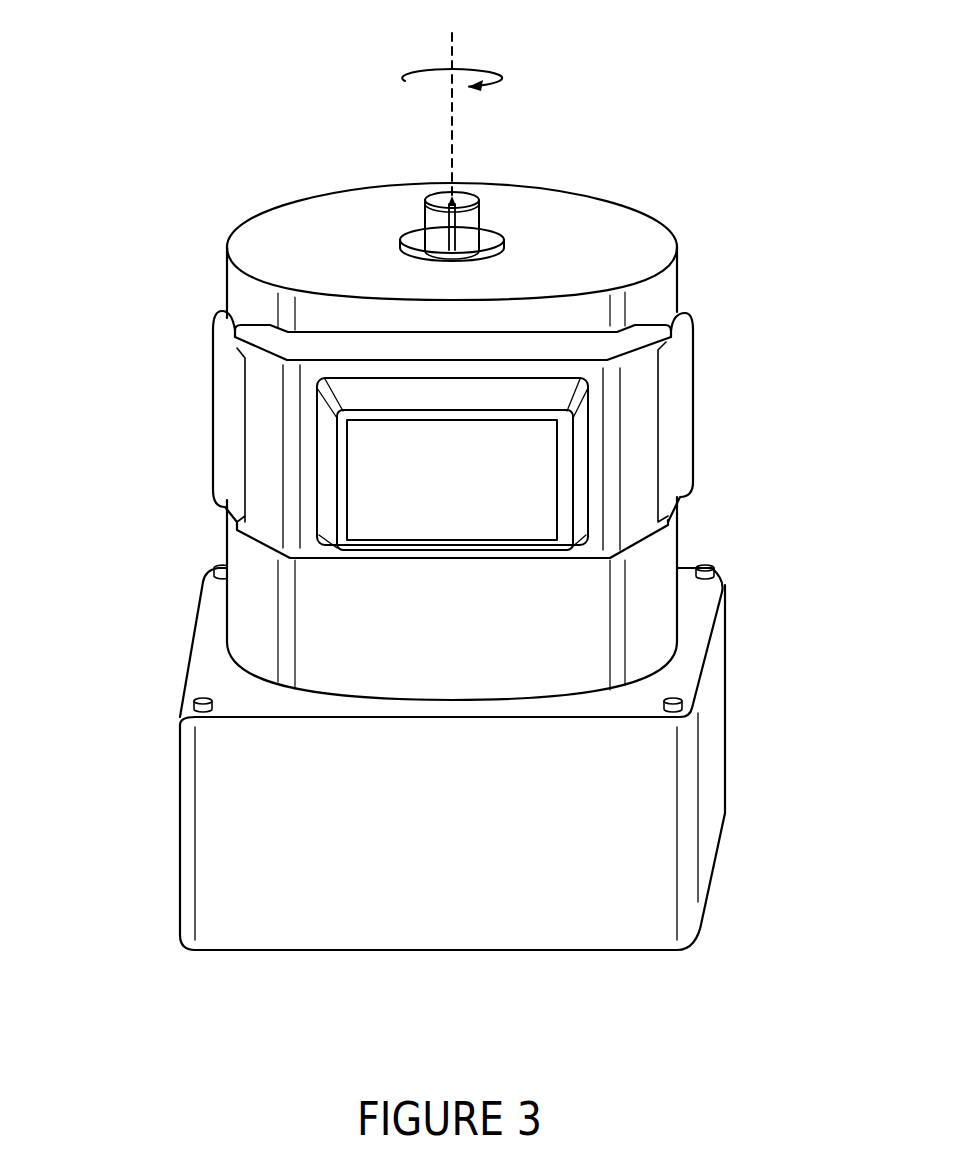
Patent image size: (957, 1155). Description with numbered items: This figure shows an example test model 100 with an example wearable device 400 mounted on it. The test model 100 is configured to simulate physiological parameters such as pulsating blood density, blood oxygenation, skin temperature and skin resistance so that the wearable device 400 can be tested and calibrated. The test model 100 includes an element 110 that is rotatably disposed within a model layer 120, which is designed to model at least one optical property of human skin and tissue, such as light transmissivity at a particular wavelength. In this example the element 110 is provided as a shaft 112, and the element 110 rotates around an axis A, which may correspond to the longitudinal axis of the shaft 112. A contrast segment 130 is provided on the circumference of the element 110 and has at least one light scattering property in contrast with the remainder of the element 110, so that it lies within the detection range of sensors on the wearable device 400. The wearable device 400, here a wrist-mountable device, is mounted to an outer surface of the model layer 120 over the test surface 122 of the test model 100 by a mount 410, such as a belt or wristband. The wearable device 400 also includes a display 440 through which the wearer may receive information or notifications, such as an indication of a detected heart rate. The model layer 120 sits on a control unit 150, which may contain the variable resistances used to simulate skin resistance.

The axis A is at (452, 100).
The test model 100 is at (677, 179).
The element 110 is at (440, 173).
The shaft 112 is at (463, 200).
The model layer 120 is at (297, 228).
The test surface 122 is at (505, 577).
The contrast segment 130 is at (447, 233).
The control unit 150 is at (220, 835).
The wearable device 400 is at (706, 502).
The mount 410 is at (693, 403).
The display 440 is at (358, 502).